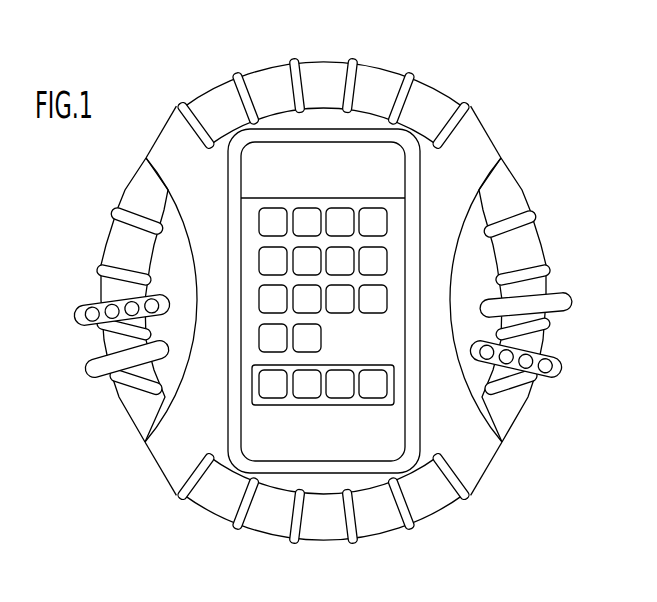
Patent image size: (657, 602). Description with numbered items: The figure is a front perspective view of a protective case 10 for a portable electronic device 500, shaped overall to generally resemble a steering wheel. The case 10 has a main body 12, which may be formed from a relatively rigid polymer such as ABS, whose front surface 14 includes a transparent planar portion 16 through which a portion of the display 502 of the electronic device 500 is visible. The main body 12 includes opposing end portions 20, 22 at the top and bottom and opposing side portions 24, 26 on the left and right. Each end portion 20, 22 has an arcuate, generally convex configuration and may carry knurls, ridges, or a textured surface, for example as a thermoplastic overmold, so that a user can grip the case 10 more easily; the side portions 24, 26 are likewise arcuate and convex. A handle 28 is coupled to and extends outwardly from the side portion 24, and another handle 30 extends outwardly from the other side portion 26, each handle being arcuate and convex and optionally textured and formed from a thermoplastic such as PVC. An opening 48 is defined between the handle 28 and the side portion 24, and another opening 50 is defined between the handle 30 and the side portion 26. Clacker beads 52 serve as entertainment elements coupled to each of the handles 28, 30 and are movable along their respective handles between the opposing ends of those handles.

The protective case 10 is at (530, 100).
The main body 12 is at (447, 75).
The front surface 14 is at (447, 441).
The transparent planar portion 16 is at (400, 428).
The end portion 20 is at (310, 82).
The end portion 22 is at (318, 528).
The side portion 24 is at (520, 233).
The side portion 26 is at (120, 200).
The handle 28 is at (537, 338).
The handle 30 is at (118, 255).
The opening 48 is at (523, 400).
The opening 50 is at (130, 423).
The clacker beads 52 is at (550, 310).
The portable electronic device 500 is at (423, 193).
The display 502 is at (397, 263).